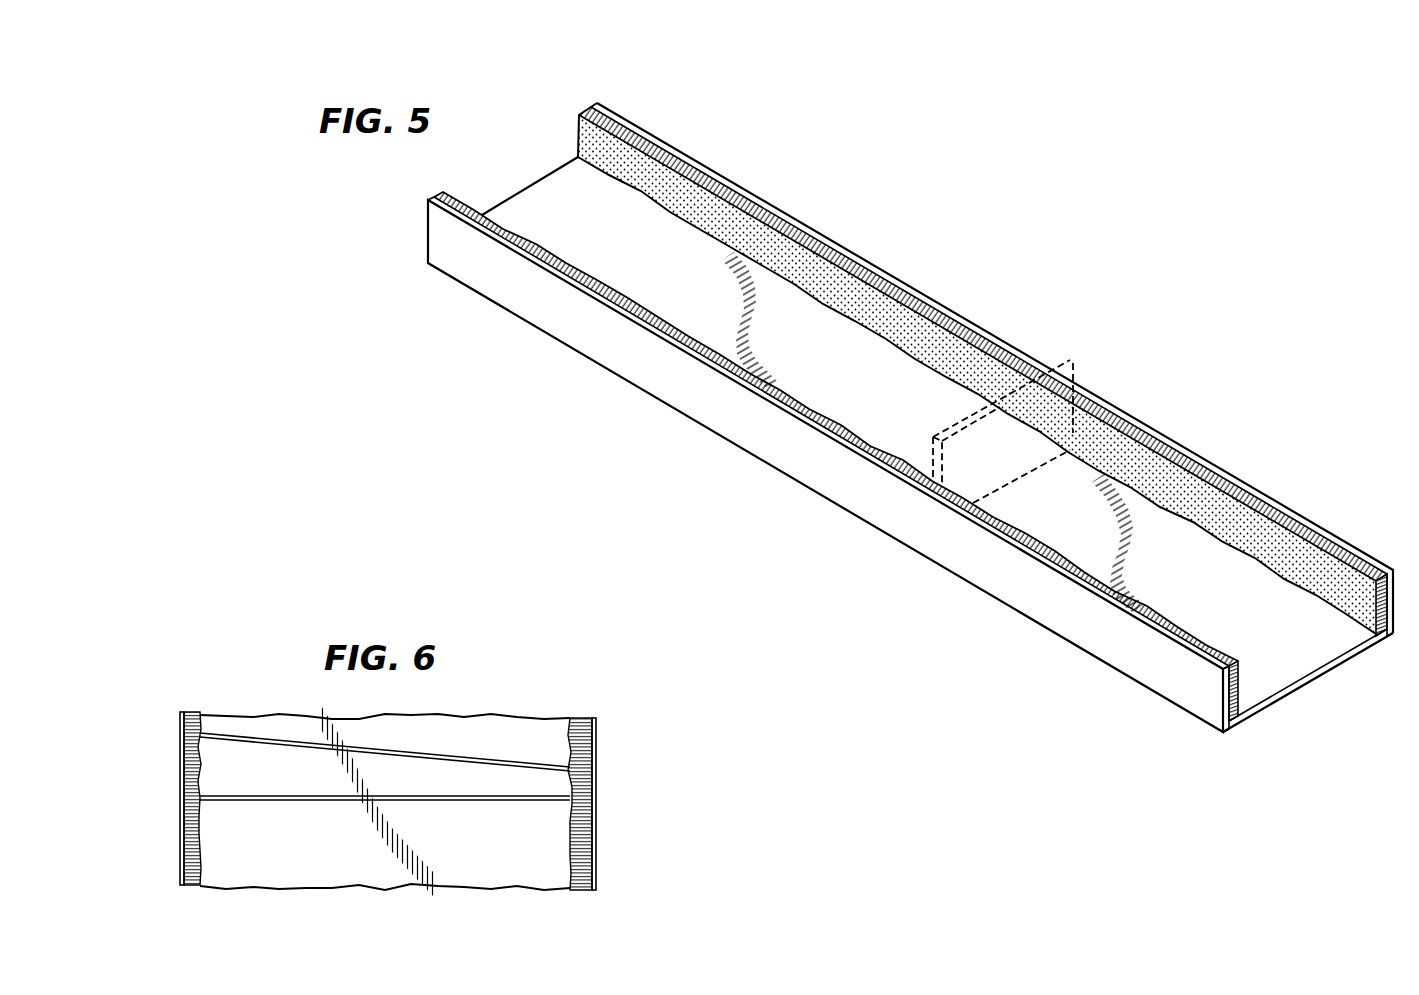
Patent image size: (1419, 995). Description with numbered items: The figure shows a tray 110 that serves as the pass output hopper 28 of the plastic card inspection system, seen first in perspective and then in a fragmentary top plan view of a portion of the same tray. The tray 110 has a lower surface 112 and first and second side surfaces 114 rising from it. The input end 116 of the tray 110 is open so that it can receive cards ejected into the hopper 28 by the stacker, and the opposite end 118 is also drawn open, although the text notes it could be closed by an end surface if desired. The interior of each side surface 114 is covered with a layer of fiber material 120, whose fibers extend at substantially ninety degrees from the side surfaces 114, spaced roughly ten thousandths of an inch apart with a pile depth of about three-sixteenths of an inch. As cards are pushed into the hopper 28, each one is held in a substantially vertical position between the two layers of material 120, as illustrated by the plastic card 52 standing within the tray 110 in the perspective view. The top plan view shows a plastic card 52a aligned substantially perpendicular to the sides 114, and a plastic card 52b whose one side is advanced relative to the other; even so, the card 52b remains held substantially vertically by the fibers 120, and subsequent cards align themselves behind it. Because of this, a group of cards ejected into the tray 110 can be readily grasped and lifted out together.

In FIG. 5, the pass output hopper 28 is at (858, 572).
In FIG. 5, the plastic card 52 is at (1073, 363).
In FIG. 6, the plastic card 52a is at (307, 803).
In FIG. 6, the plastic card 52b is at (302, 752).
In FIG. 5, the tray 110 is at (830, 480).
In FIG. 5, the lower surface 112 is at (843, 343).
In FIG. 6, the lower surface 112 is at (470, 723).
In FIG. 5, the side surface 114 is at (870, 263).
In FIG. 6, the side surface 114 is at (181, 853).
In FIG. 5, the input end 116 is at (543, 187).
In FIG. 5, the opposite end 118 is at (1310, 678).
In FIG. 5, the layer of fiber material 120 is at (963, 353).
In FIG. 6, the layer of fiber material 120 is at (180, 766).